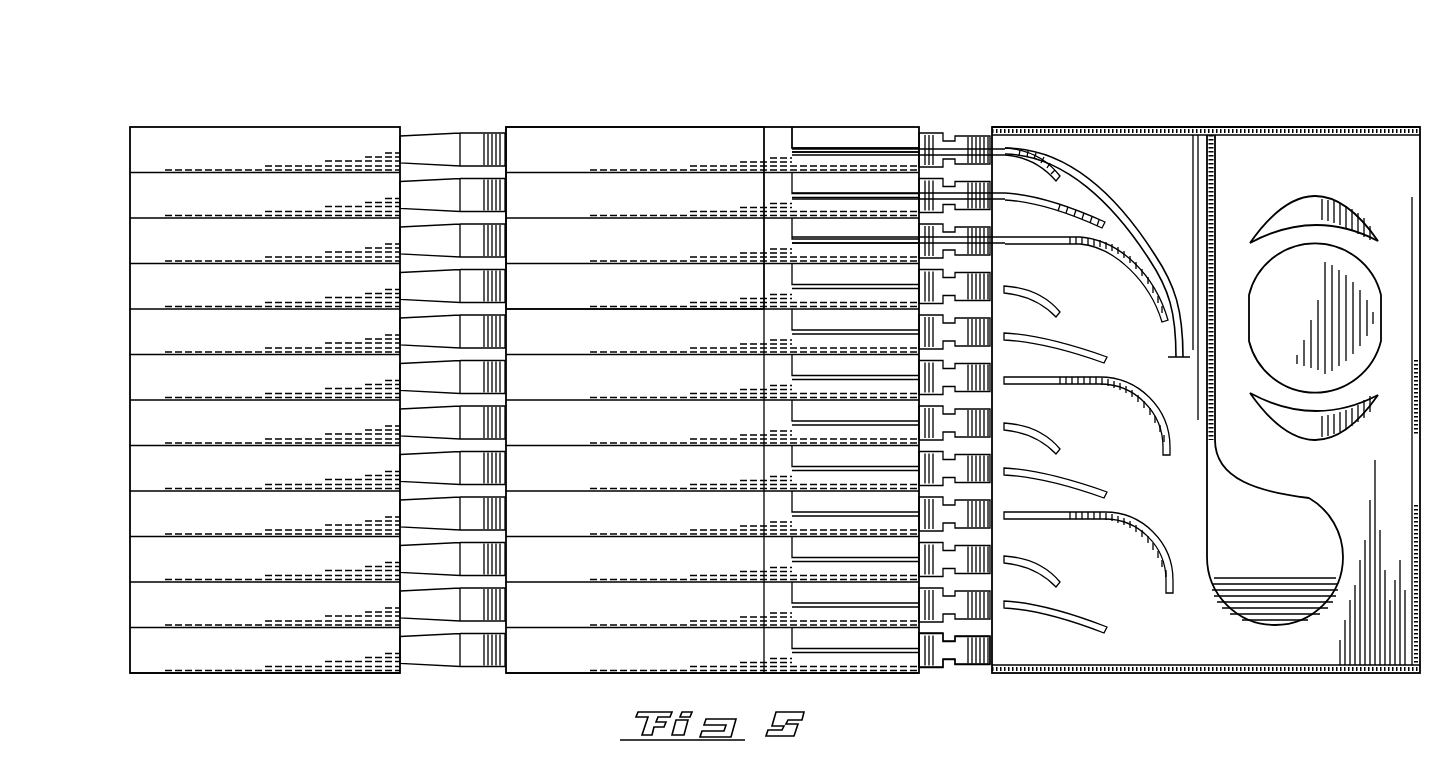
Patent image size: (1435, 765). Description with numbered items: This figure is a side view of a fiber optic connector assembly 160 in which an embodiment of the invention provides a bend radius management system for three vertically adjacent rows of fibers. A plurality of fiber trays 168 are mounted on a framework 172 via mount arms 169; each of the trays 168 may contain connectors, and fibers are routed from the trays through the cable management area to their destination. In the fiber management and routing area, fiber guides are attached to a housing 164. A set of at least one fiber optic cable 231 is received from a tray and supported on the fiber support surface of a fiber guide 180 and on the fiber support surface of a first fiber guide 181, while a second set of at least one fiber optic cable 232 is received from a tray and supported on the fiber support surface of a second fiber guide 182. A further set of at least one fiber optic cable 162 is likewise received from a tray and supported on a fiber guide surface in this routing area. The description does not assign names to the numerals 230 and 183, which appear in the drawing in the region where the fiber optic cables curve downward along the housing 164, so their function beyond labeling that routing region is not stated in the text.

The fiber optic connector assembly 160 is at (783, 118).
The second set of fiber optic cable 162 is at (897, 175).
The housing 164 is at (1103, 158).
The fiber trays 168 is at (566, 299).
The mount arms 169 is at (960, 603).
The framework 172 is at (1270, 127).
The fiber guide 180 is at (1025, 425).
The first fiber guide 181 is at (1075, 470).
The second fiber guide 182 is at (1140, 532).
The fiber routing path 183 is at (1125, 228).
The first fiber 230 is at (1027, 145).
The fiber optic cable 231 is at (1065, 214).
The second set of fiber optic cable 232 is at (1165, 290).